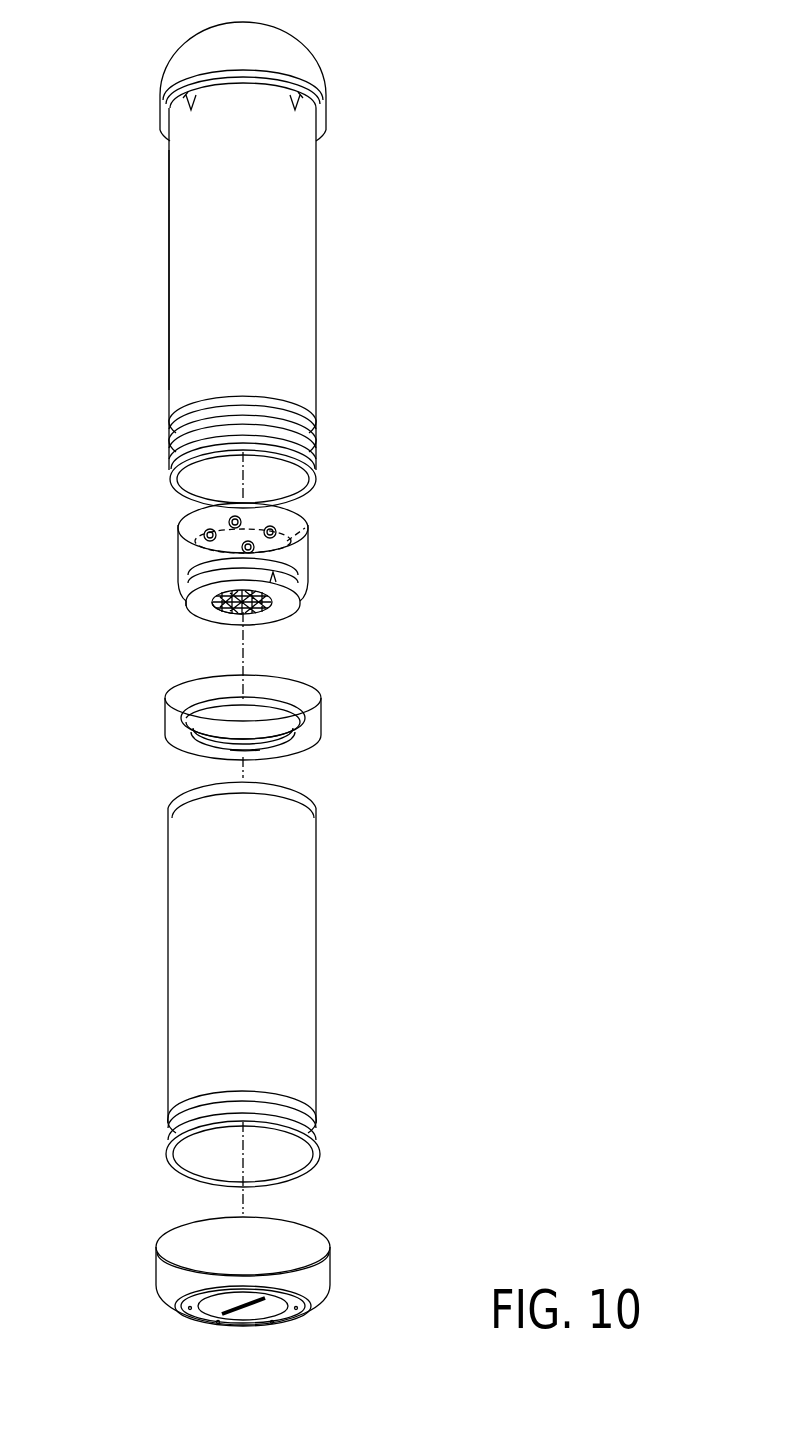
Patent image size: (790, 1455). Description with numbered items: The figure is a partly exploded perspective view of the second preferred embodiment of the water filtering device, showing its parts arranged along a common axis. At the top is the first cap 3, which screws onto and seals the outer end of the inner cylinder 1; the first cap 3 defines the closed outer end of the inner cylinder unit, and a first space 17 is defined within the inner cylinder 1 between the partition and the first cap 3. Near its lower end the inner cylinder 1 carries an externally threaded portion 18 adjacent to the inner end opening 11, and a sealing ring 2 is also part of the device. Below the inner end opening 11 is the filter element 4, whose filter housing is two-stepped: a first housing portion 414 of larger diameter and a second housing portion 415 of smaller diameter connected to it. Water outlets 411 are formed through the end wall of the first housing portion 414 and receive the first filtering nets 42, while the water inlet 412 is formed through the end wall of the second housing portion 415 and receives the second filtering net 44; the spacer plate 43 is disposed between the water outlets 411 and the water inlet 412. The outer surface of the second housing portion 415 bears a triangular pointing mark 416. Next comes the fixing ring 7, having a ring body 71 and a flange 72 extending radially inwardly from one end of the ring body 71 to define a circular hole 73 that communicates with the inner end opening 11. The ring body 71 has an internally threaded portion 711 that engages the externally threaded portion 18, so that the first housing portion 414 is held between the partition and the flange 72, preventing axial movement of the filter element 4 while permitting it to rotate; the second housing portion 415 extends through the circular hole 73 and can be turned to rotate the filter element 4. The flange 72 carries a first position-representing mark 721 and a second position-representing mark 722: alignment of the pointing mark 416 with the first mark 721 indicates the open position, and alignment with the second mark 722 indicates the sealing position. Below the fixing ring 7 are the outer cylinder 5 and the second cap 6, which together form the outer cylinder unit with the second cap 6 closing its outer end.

The inner cylinder 1 is at (286, 313).
The sealing ring 2 is at (327, 430).
The first cap 3 is at (336, 39).
The filter element 4 is at (244, 544).
The outer cylinder 5 is at (326, 930).
The second cap 6 is at (347, 1264).
The fixing ring 7 is at (268, 728).
The inner end opening 11 is at (330, 494).
The first space 17 is at (200, 258).
The externally threaded portion 18 is at (320, 450).
The first filtering nets 42 is at (205, 530).
The spacer plate 43 is at (306, 524).
The second filtering net 44 is at (222, 611).
The water outlets 411 is at (182, 545).
The water inlet 412 is at (278, 604).
The first housing portion 414 is at (177, 525).
The second housing portion 415 is at (178, 598).
The pointing mark 416 is at (290, 586).
The ring body 71 is at (173, 706).
The flange 72 is at (308, 735).
The circular hole 73 is at (211, 733).
The internally threaded portion 711 is at (250, 745).
The first position-representing mark 721 is at (223, 699).
The second position-representing mark 722 is at (298, 708).